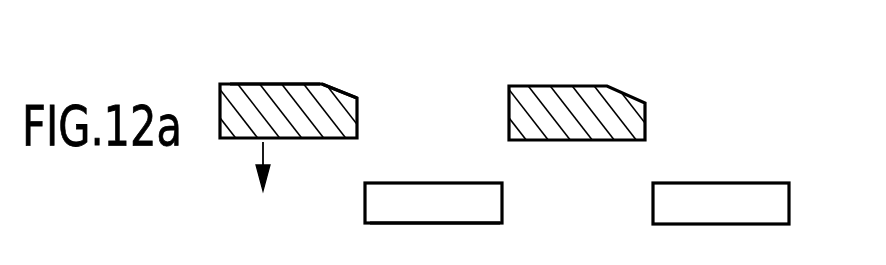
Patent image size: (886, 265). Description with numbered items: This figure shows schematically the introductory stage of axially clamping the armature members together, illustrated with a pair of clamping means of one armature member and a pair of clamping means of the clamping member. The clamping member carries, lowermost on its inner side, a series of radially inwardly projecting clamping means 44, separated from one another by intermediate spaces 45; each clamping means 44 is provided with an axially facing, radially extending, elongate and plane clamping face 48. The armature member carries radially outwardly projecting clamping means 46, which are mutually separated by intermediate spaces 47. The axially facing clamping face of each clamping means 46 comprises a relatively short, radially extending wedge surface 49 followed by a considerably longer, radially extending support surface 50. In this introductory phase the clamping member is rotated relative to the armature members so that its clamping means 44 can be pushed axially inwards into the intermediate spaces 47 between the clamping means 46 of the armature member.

The clamping means 44 is at (260, 127).
The intermediate spaces 45 is at (490, 136).
The clamping means 46 is at (393, 207).
The intermediate spaces 47 is at (320, 214).
The clamping face 48 is at (435, 244).
The wedge surface 49 is at (343, 88).
The support surface 50 is at (290, 84).